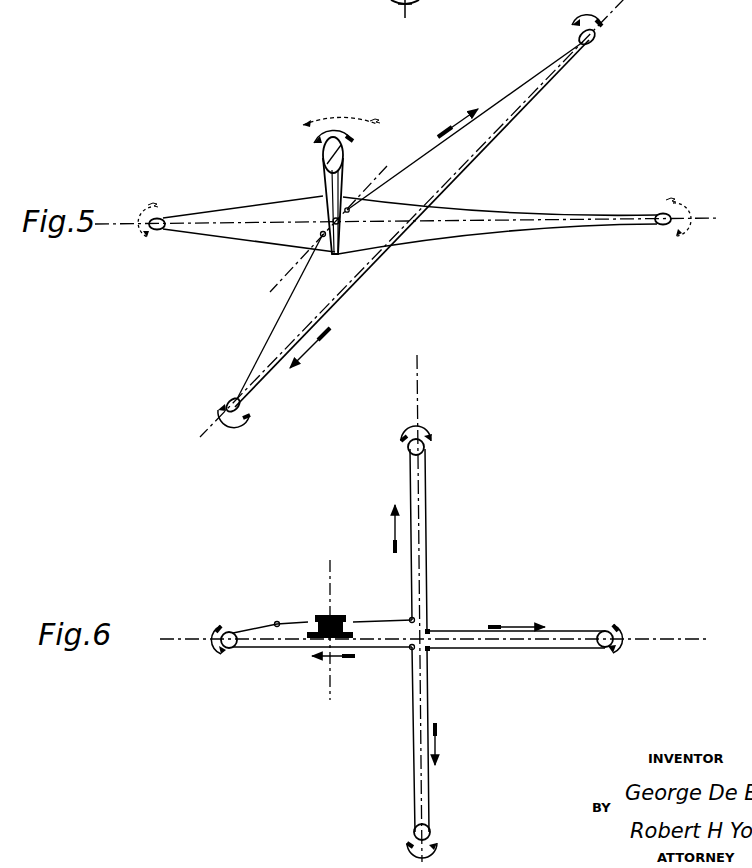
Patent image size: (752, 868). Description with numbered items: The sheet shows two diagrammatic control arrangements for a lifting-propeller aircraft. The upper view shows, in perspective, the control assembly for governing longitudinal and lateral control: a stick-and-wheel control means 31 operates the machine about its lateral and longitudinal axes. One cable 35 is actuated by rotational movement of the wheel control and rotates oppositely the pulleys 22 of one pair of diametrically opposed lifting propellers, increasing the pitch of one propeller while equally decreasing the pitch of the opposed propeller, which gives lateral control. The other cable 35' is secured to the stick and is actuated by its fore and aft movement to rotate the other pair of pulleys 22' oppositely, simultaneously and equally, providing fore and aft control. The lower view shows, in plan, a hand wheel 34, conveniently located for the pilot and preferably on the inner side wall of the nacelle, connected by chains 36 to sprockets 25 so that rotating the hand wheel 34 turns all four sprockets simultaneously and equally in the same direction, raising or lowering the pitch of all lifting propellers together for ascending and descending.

In FIG. 5, the pulleys 22 is at (415, 221).
In FIG. 5, the pulleys 22' is at (661, 233).
In FIG. 5, the stick-and-wheel control means 31 is at (349, 207).
In FIG. 5, the cable 35 is at (328, 185).
In FIG. 5, the cable 35' is at (397, 218).
In FIG. 6, the sprockets 25 is at (425, 448).
In FIG. 6, the hand wheel 34 is at (352, 630).
In FIG. 6, the chains 36 is at (297, 618).